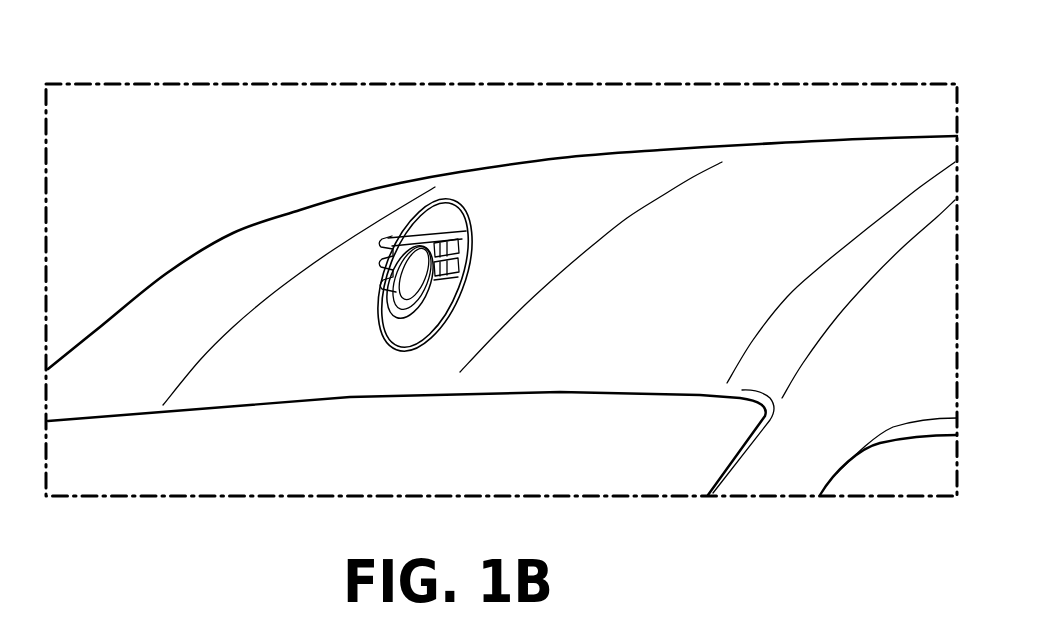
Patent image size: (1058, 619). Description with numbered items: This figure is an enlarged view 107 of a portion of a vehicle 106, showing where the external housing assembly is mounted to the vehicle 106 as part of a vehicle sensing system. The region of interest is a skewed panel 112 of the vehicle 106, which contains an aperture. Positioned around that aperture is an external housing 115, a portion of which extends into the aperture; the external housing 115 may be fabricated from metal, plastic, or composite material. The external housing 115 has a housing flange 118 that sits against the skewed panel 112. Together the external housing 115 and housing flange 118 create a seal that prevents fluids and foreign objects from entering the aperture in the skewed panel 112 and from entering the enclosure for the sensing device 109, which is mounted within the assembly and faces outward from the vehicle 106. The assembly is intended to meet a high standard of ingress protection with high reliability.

The vehicle 106 is at (892, 135).
The enlarged view 107 is at (157, 84).
The sensing device 109 is at (434, 272).
The skewed panel 112 is at (477, 282).
The external housing 115 is at (480, 200).
The housing flange 118 is at (389, 349).